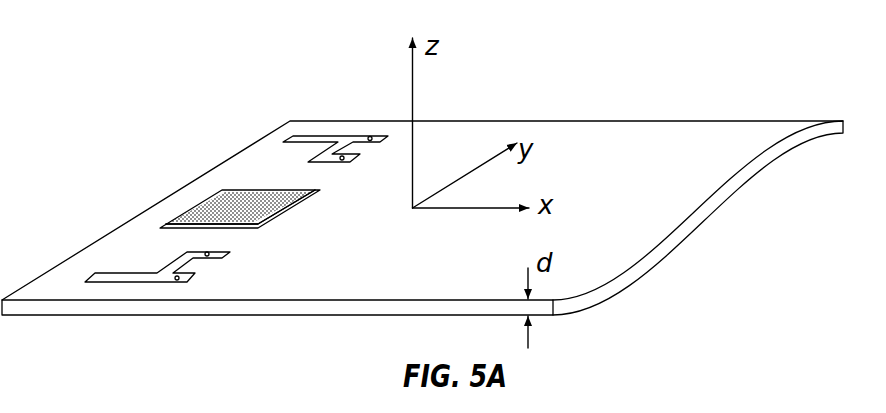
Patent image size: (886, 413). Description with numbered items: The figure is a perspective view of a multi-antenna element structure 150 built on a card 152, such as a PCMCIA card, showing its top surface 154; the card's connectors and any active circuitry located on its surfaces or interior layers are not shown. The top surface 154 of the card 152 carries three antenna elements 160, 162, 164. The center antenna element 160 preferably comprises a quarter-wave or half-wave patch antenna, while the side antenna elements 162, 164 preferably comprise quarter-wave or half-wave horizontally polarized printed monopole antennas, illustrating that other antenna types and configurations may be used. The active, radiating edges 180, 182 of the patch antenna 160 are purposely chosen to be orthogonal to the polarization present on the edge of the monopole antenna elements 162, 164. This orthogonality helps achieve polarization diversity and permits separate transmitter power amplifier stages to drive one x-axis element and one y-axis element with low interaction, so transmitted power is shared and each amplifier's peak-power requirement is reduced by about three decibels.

The multi-antenna element structure 150 is at (422, 166).
The card 152 is at (468, 118).
The top surface 154 is at (670, 130).
The antenna element 160 is at (224, 190).
The antenna element 162 is at (335, 143).
The antenna element 164 is at (123, 273).
The active edge 180 is at (182, 212).
The active edge 182 is at (277, 215).